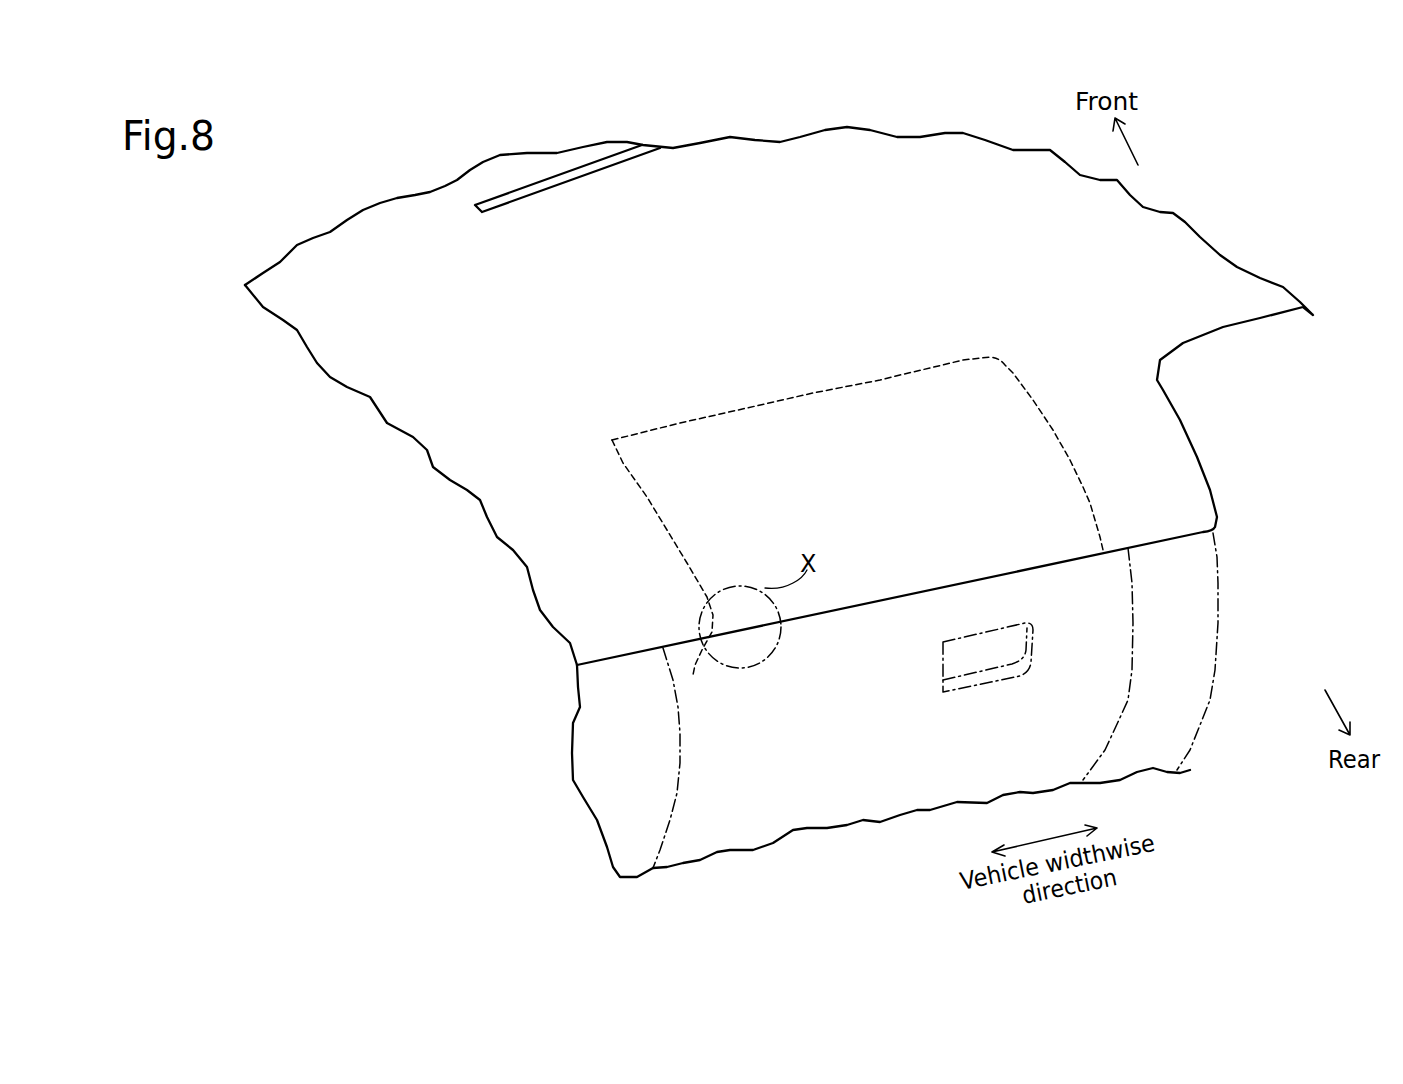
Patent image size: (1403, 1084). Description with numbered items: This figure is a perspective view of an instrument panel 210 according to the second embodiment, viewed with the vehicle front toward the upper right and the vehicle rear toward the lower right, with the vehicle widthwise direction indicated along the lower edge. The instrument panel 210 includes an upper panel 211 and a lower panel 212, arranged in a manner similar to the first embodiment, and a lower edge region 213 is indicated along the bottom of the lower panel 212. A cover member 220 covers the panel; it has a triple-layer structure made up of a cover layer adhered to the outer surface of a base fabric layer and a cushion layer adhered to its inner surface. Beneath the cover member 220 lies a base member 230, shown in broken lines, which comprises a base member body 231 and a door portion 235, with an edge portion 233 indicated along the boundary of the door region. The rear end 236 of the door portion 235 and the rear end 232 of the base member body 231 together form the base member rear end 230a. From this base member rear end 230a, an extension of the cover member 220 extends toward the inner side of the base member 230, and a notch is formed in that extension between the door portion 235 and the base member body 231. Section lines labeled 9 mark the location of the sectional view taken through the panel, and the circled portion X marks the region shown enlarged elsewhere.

The cover member 220 is at (1185, 247).
The instrument panel 210 is at (358, 531).
The upper panel 211 is at (423, 469).
The lower panel 212 is at (565, 752).
The lower edge of back door 213 is at (917, 802).
The base member 230 is at (1307, 418).
The base member body 231 is at (1160, 433).
The door portion 235 is at (1065, 498).
The garnish edge portion 233 is at (915, 380).
The rear end of the base member body 232 is at (1167, 527).
The rear end of the door portion 236 is at (1065, 547).
The base member rear end 230a is at (1207, 576).
The section line of FIG. 9 is at (690, 382).